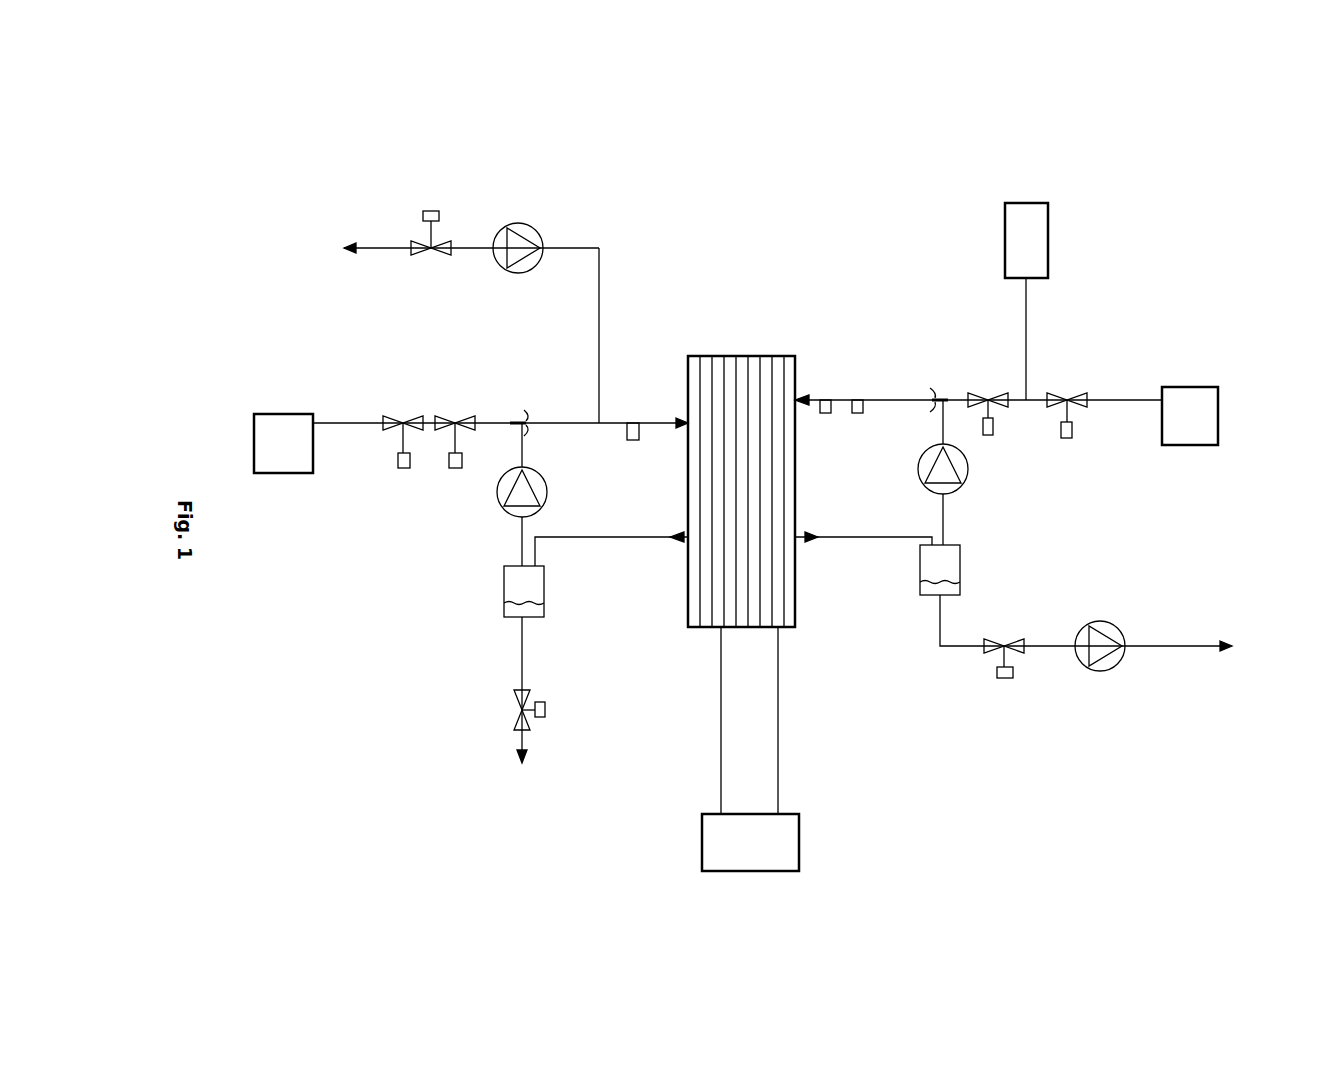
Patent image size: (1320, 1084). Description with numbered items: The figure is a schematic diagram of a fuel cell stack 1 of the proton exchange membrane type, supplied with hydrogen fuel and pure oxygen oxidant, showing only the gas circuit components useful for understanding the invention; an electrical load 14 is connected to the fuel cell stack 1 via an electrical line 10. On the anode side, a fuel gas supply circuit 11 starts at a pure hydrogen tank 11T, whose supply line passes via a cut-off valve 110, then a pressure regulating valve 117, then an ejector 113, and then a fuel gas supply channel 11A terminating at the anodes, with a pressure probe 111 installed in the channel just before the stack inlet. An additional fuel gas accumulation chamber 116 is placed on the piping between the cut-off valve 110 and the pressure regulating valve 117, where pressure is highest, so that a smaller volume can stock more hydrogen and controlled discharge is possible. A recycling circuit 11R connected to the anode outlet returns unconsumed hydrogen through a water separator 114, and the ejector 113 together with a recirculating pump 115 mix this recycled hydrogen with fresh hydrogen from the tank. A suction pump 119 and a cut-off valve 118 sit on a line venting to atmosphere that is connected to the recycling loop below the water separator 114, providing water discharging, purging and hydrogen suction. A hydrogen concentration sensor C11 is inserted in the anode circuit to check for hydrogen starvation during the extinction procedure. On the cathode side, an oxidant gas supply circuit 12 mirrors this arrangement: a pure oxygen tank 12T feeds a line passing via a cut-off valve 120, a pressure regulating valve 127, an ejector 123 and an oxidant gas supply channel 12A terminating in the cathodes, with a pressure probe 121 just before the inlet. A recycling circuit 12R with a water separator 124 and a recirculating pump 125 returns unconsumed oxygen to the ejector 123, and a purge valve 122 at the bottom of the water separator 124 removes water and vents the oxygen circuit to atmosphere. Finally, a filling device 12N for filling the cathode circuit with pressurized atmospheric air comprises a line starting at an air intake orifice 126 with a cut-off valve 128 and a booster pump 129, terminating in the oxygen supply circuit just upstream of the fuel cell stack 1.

The fuel cell stack 1 is at (736, 355).
The electrical line 10 is at (714, 752).
The electrical load 14 is at (777, 843).
The fuel gas supply circuit 11 is at (984, 160).
The pure hydrogen tank 11T is at (1192, 386).
The fuel gas supply channel 11A is at (880, 398).
The recycling circuit 11R is at (945, 514).
The hydrogen concentration sensor C11 is at (826, 398).
The pressure probe 111 is at (858, 399).
The ejector 113 is at (942, 395).
The pressure regulating valve 117 is at (988, 399).
The cut-off valve 110 is at (1067, 395).
The additional fuel gas accumulation chamber 116 is at (1048, 240).
The recirculating pump 115 is at (968, 462).
The water separator 114 is at (962, 568).
The cut-off valve 118 is at (1000, 650).
The suction pump 119 is at (1112, 625).
The oxidant gas supply circuit 12 is at (444, 168).
The pure oxygen tank 12T is at (283, 412).
The oxidant gas supply channel 12A is at (602, 421).
The filling device 12N is at (630, 242).
The recycling circuit 12R is at (520, 538).
The cut-off valve 120 is at (403, 415).
The pressure regulating valve 127 is at (455, 415).
The ejector 123 is at (520, 415).
The pressure probe 121 is at (640, 421).
The air intake orifice 126 is at (344, 245).
The cut-off valve 128 is at (432, 246).
The booster pump 129 is at (533, 233).
The recirculating pump 125 is at (505, 483).
The water separator 124 is at (502, 592).
The purge valve 122 is at (518, 720).